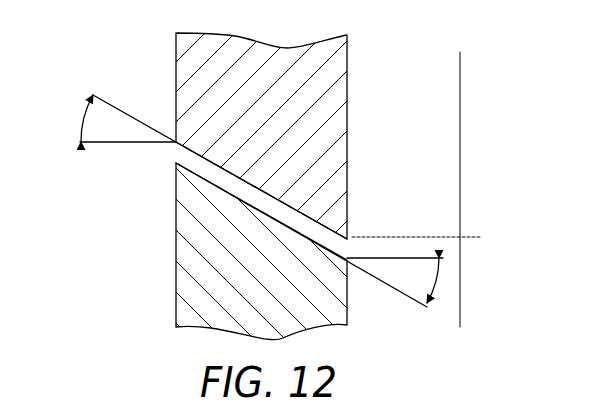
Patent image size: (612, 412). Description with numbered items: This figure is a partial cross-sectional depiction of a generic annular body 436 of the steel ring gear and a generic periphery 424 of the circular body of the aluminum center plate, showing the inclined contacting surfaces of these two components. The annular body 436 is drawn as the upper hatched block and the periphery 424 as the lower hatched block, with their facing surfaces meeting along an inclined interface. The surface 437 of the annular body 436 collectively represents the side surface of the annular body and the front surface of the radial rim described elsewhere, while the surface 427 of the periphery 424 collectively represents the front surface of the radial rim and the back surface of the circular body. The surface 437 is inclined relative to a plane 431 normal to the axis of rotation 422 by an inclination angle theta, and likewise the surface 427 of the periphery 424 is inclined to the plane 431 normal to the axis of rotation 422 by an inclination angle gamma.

The axis of rotation 422 is at (462, 62).
The periphery of the circular body 424 is at (160, 274).
The surface of the periphery 427 is at (233, 197).
The plane normal to the axis of rotation 431 is at (375, 237).
The annular body 436 is at (260, 68).
The surface of the annular body 437 is at (205, 157).